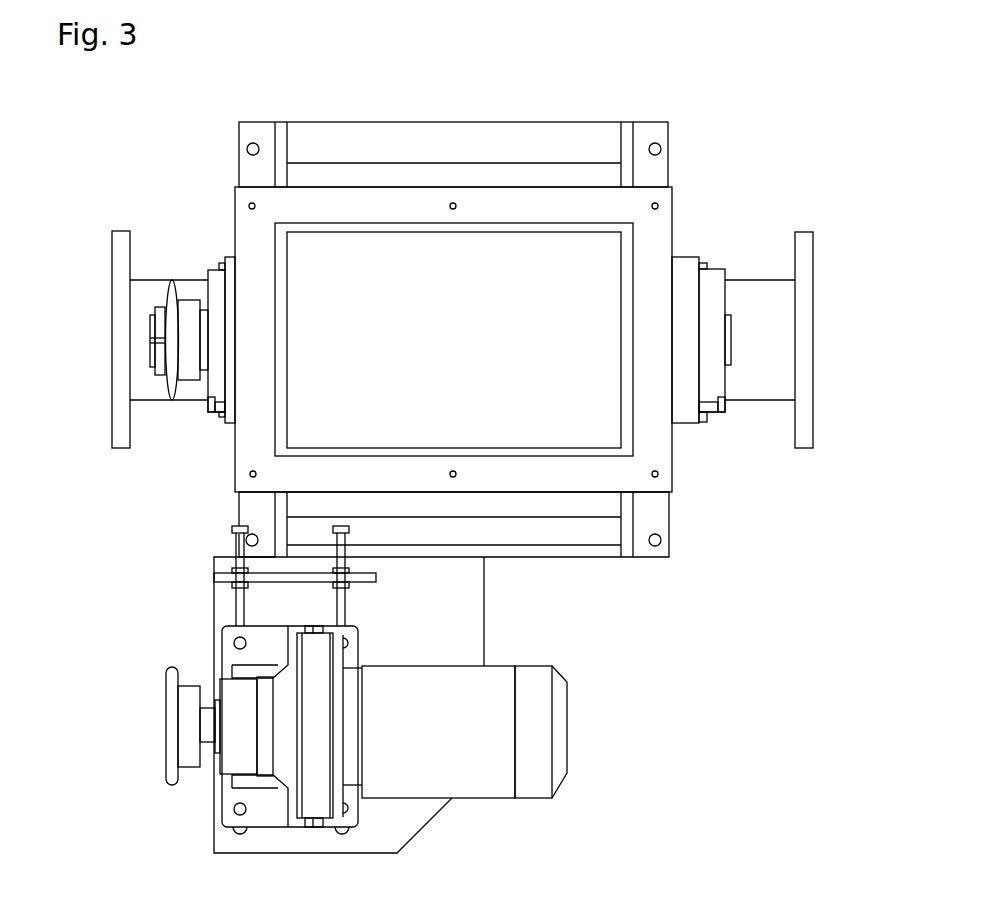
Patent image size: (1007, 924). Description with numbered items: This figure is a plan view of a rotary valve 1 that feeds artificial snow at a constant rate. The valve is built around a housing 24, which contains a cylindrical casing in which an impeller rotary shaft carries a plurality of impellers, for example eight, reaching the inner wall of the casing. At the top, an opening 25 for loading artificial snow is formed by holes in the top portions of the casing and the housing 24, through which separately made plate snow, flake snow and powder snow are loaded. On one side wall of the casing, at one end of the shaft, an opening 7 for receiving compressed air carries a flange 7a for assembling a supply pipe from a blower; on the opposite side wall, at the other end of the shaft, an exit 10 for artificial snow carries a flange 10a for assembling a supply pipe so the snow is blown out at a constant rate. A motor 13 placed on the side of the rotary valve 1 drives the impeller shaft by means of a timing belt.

The rotary valve 1 is at (677, 613).
The opening for receiving compressed air 7 is at (112, 338).
The flange 7a is at (120, 245).
The exit for artificial snow 10 is at (813, 339).
The flange 10a is at (803, 243).
The motor 13 is at (490, 808).
The housing 24 is at (509, 205).
The opening for loading of artificial snow 25 is at (380, 264).